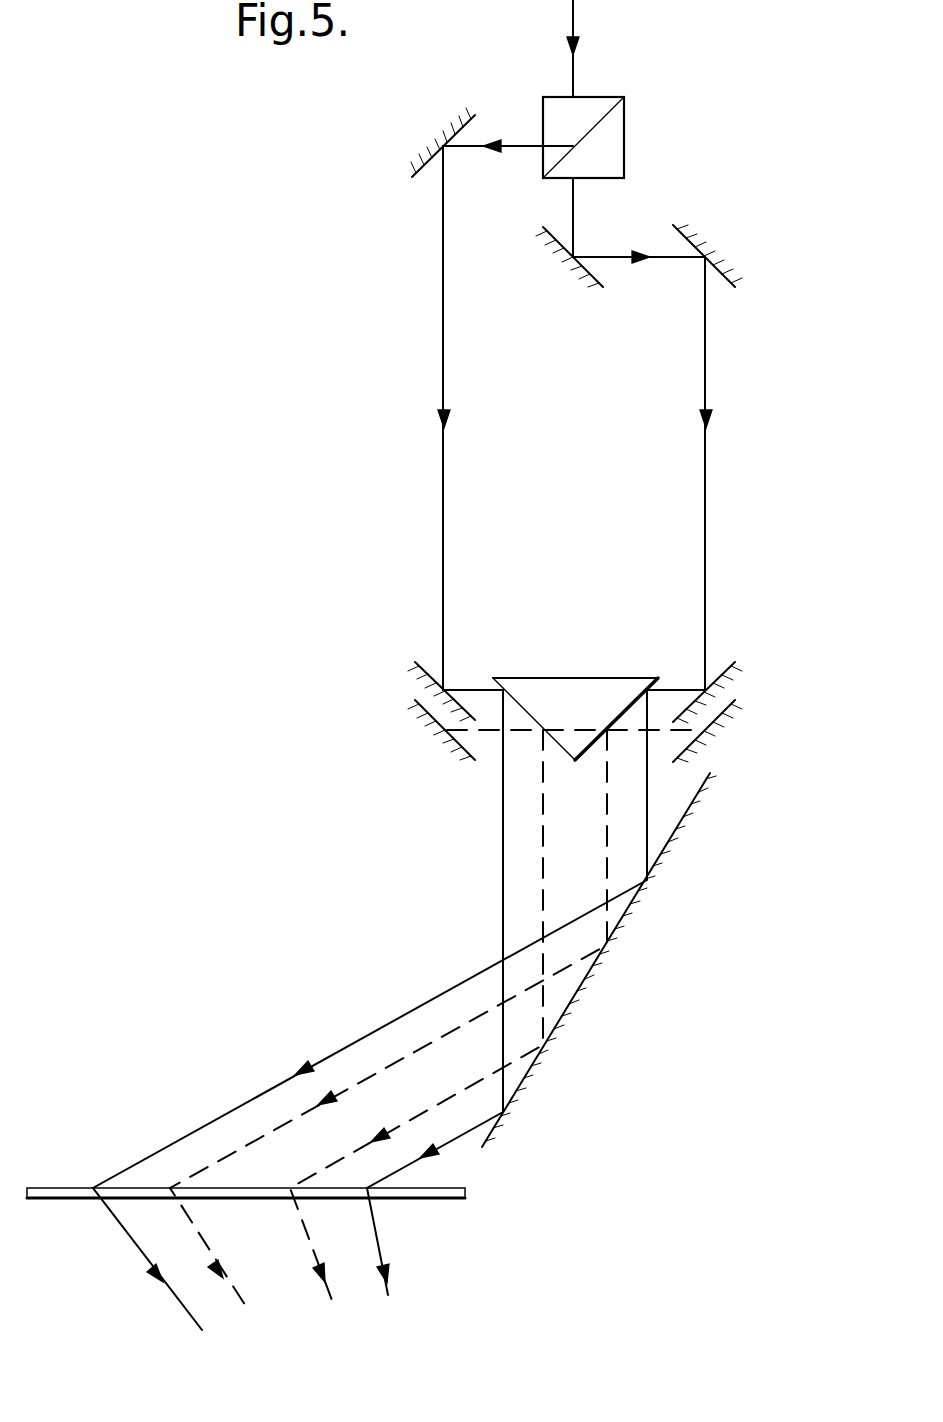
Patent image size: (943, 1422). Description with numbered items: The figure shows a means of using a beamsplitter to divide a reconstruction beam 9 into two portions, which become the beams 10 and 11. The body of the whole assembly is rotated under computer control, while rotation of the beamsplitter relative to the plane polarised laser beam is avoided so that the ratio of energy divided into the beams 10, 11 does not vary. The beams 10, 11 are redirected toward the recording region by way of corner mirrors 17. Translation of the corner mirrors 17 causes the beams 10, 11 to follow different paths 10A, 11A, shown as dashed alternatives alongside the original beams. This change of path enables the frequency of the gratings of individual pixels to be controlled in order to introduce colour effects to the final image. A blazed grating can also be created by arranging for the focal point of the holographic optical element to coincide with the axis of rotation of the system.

The reconstruction beam 9 is at (573, 20).
The beam 10 is at (443, 543).
The beam 11 is at (706, 548).
The path 10A is at (482, 1083).
The path 11A is at (387, 1068).
The corner mirrors 17 is at (397, 652).